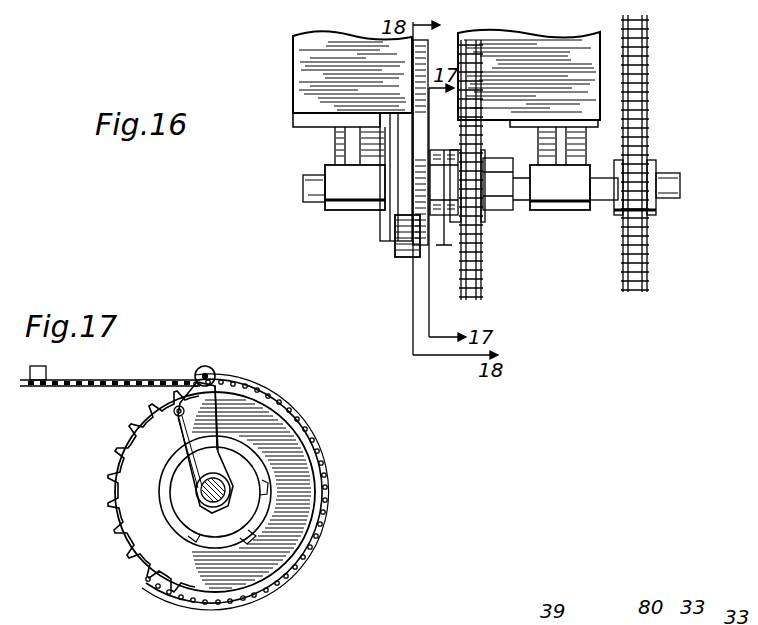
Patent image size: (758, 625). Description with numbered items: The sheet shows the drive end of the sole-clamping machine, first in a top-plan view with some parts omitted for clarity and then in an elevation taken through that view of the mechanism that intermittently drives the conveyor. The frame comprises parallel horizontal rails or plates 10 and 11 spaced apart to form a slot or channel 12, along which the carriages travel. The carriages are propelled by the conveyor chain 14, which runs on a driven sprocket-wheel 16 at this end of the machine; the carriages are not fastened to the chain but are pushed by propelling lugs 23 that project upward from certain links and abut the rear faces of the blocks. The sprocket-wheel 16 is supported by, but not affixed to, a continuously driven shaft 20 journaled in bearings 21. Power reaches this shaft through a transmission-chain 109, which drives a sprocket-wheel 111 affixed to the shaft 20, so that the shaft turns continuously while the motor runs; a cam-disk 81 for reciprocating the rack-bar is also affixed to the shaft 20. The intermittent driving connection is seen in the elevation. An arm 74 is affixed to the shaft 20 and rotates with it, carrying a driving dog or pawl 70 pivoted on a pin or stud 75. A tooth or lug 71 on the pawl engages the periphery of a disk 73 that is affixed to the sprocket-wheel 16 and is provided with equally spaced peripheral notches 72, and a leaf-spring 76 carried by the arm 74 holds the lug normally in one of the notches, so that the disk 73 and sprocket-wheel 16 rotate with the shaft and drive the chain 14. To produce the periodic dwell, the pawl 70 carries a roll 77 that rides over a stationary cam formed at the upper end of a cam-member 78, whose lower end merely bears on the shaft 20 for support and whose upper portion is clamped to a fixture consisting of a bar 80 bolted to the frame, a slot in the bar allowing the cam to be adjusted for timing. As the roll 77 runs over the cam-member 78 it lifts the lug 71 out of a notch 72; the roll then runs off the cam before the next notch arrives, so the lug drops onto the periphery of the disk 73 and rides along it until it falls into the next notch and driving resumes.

In FIG. 16, the rail 10 is at (541, 58).
In FIG. 16, the rail 11 is at (310, 44).
In FIG. 16, the slot or channel 12 is at (444, 52).
In FIG. 17, the conveyor chain 14 is at (116, 380).
In FIG. 16, the driven sprocket-wheel 16 is at (497, 218).
In FIG. 17, the driven sprocket-wheel 16 is at (152, 572).
In FIG. 16, the shaft 20 is at (681, 185).
In FIG. 17, the shaft 20 is at (200, 512).
In FIG. 16, the bearing 21 is at (357, 183).
In FIG. 17, the propelling lug 23 is at (47, 378).
In FIG. 16, the driving pawl 70 is at (485, 225).
In FIG. 17, the driving pawl 70 is at (232, 378).
In FIG. 17, the lug 71 is at (250, 403).
In FIG. 17, the peripheral notch 72 is at (310, 425).
In FIG. 16, the disk 73 is at (465, 235).
In FIG. 17, the disk 73 is at (257, 470).
In FIG. 17, the arm 74 is at (200, 485).
In FIG. 16, the pin or stud 75 is at (425, 157).
In FIG. 17, the pin or stud 75 is at (135, 445).
In FIG. 17, the leaf-spring 76 is at (186, 468).
In FIG. 16, the roll 77 is at (437, 215).
In FIG. 17, the roll 77 is at (213, 366).
In FIG. 16, the cam-member 78 is at (397, 237).
In FIG. 16, the fixture bar 80 is at (405, 178).
In FIG. 16, the cam-disk 81 is at (407, 263).
In FIG. 16, the transmission-chain 109 is at (648, 72).
In FIG. 16, the sprocket-wheel 111 is at (652, 206).